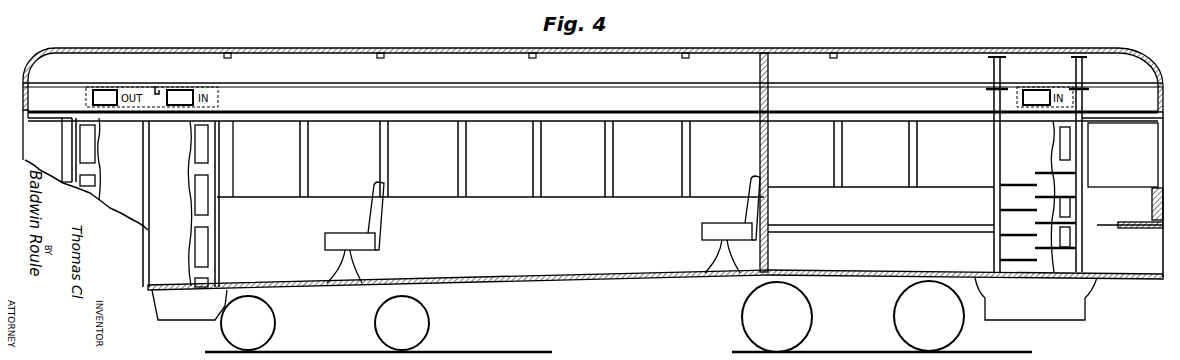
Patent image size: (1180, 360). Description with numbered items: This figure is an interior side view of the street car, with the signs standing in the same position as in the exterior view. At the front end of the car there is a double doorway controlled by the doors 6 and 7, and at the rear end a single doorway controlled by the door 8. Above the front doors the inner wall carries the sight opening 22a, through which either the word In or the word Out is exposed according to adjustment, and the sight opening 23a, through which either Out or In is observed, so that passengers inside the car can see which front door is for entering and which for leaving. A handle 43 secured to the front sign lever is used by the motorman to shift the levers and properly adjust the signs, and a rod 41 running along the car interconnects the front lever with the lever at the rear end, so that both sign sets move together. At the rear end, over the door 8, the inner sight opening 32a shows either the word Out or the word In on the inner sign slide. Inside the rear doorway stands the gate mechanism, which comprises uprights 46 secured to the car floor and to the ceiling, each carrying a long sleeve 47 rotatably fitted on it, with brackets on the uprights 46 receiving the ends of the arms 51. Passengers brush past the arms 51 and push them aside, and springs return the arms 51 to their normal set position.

The sight opening 22a is at (108, 88).
The handle 43 is at (163, 88).
The sight opening 23a is at (194, 87).
The rod 41 is at (308, 84).
The uprights 46 is at (1002, 88).
The sight opening 32a is at (1042, 88).
The door 6 is at (91, 159).
The door 7 is at (200, 204).
The door 8 is at (1053, 149).
The arms 51 is at (1040, 183).
The sleeve 47 is at (998, 212).